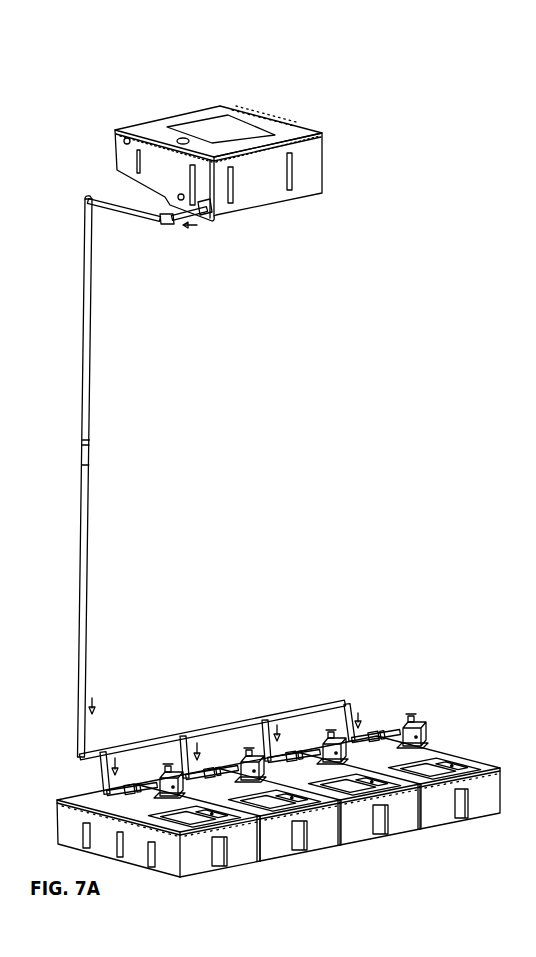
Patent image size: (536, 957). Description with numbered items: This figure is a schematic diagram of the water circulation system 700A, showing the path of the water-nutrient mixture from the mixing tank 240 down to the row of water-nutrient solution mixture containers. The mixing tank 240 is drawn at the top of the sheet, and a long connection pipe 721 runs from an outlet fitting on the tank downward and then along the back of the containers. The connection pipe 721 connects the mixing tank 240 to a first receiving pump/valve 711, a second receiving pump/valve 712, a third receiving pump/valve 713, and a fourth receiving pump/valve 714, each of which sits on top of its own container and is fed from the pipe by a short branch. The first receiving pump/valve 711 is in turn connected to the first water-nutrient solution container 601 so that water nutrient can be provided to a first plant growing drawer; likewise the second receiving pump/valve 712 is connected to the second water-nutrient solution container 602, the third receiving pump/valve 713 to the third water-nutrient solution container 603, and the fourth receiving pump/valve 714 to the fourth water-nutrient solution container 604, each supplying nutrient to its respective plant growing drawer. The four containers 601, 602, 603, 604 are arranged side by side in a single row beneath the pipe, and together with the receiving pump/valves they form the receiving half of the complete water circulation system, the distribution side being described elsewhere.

The water circulation system 700A is at (233, 79).
The mixing tank 240 is at (322, 160).
The connection pipe 721 is at (88, 498).
The first receiving pump/valve 711 is at (176, 768).
The second receiving pump/valve 712 is at (256, 751).
The third receiving pump/valve 713 is at (340, 734).
The fourth receiving pump/valve 714 is at (427, 727).
The first water-nutrient solution container 601 is at (213, 870).
The second water-nutrient solution container 602 is at (295, 853).
The third water-nutrient solution container 603 is at (378, 838).
The fourth water-nutrient solution container 604 is at (458, 822).